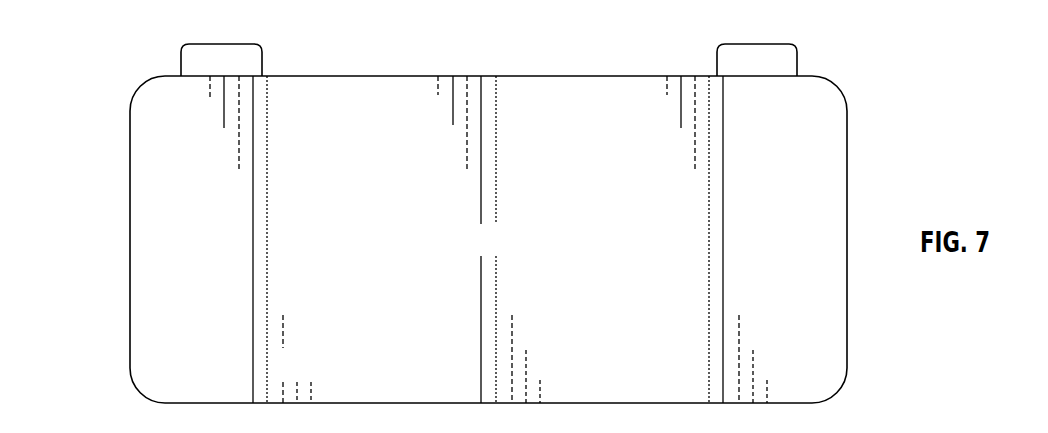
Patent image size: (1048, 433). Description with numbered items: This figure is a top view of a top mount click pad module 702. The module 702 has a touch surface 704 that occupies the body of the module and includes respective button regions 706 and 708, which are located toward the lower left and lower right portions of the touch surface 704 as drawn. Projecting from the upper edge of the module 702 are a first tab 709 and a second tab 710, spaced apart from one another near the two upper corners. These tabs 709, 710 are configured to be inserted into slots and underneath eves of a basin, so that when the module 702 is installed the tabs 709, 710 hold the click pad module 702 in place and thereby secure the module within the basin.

The click pad module 702 is at (662, 403).
The touch surface 704 is at (508, 252).
The button region 706 is at (318, 377).
The button region 708 is at (692, 377).
The first tab 709 is at (181, 66).
The second tab 710 is at (717, 66).